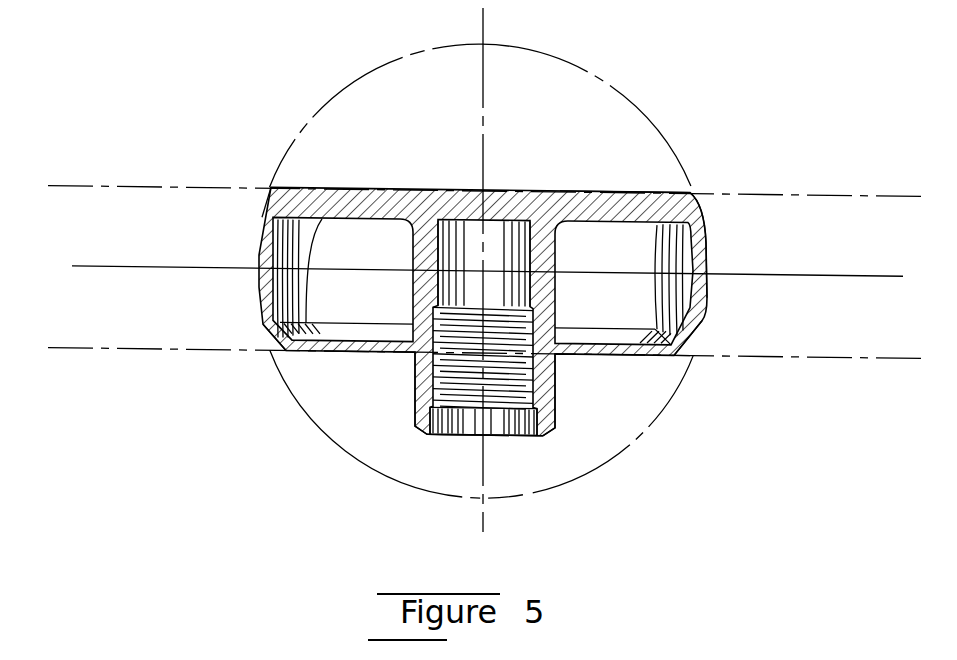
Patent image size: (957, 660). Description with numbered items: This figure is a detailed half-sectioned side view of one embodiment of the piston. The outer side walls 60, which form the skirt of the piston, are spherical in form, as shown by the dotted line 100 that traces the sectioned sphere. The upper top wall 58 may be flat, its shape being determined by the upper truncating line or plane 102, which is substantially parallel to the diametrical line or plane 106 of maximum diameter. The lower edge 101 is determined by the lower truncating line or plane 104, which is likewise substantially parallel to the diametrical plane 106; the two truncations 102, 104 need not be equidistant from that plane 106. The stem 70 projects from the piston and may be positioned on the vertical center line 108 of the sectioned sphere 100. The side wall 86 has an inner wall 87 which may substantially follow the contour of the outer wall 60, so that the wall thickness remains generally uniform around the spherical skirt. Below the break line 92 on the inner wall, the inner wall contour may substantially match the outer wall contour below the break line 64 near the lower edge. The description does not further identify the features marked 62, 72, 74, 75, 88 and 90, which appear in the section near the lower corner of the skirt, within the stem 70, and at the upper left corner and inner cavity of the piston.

The upper top wall 58 is at (300, 190).
The outer side walls 60 is at (694, 225).
The bottom left chamfer 62 is at (279, 351).
The break line 64 is at (705, 329).
The stem 70 is at (553, 381).
The counterbore 72 is at (425, 421).
The counterbore right edge 74 is at (497, 428).
The counterbore left edge 75 is at (466, 426).
The side wall 86 is at (696, 275).
The inner wall 87 is at (690, 282).
The top left corner 88 is at (268, 199).
The left bore end 90 is at (272, 248).
The break line 92 is at (388, 330).
The dotted line 100 is at (648, 116).
The lower edge 101 is at (680, 354).
The upper truncating line or plane 102 is at (788, 191).
The lower truncating line or plane 104 is at (813, 353).
The diametrical line or plane 106 is at (857, 271).
The vertical center line 108 is at (485, 25).